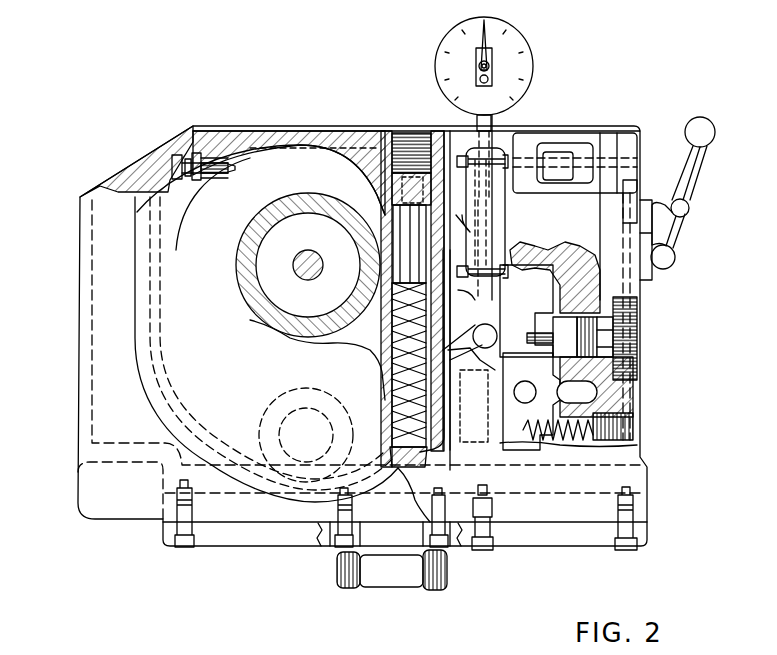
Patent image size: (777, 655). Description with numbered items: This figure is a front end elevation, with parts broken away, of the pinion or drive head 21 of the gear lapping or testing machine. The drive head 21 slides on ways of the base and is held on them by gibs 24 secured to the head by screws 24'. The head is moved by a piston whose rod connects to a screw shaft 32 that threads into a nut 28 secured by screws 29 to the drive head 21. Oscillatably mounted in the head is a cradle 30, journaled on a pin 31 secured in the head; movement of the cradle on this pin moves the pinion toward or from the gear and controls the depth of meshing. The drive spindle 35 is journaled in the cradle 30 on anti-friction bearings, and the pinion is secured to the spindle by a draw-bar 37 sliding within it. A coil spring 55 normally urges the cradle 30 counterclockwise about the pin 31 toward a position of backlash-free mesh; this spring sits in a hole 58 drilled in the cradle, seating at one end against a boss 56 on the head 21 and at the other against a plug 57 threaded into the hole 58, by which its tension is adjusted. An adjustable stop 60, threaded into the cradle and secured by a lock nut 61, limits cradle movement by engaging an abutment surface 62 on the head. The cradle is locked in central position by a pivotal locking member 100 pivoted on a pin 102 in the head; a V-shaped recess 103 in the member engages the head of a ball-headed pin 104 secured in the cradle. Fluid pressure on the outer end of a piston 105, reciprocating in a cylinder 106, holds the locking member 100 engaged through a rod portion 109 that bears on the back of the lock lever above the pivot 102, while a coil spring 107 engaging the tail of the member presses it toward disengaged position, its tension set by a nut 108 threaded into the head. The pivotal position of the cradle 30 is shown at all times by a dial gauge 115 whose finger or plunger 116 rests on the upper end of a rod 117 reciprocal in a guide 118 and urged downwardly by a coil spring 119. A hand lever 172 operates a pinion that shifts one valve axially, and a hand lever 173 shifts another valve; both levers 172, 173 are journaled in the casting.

The pinion or drive head 21 is at (110, 303).
The gibs 24 is at (447, 551).
The screws 24' is at (630, 534).
The nut 28 is at (388, 587).
The screws 29 is at (337, 540).
The cradle 30 is at (328, 143).
The pin 31 is at (290, 432).
The screw shaft 32 is at (430, 578).
The drive spindle 35 is at (318, 212).
The draw-bar 37 is at (312, 275).
The coil spring 55 is at (393, 327).
The boss 56 is at (423, 463).
The plug 57 is at (402, 243).
The hole 58 is at (417, 165).
The adjustable stop 60 is at (200, 157).
The lock nut 61 is at (200, 158).
The abutment surface 62 is at (180, 148).
The pivotal locking member 100 is at (513, 300).
The pin 102 is at (537, 393).
The V-shaped recess 103 is at (500, 363).
The ball-headed pin 104 is at (482, 330).
The piston 105 is at (563, 328).
The cylinder 106 is at (617, 325).
The coil spring 107 is at (540, 438).
The nut 108 is at (623, 425).
The rod portion 109 is at (488, 350).
The dial gauge 115 is at (523, 63).
The finger or plunger 116 is at (490, 118).
The rod 117 is at (540, 291).
The guide 118 is at (497, 225).
The coil spring 119 is at (473, 295).
The hand lever 172 is at (687, 172).
The hand lever 173 is at (680, 233).